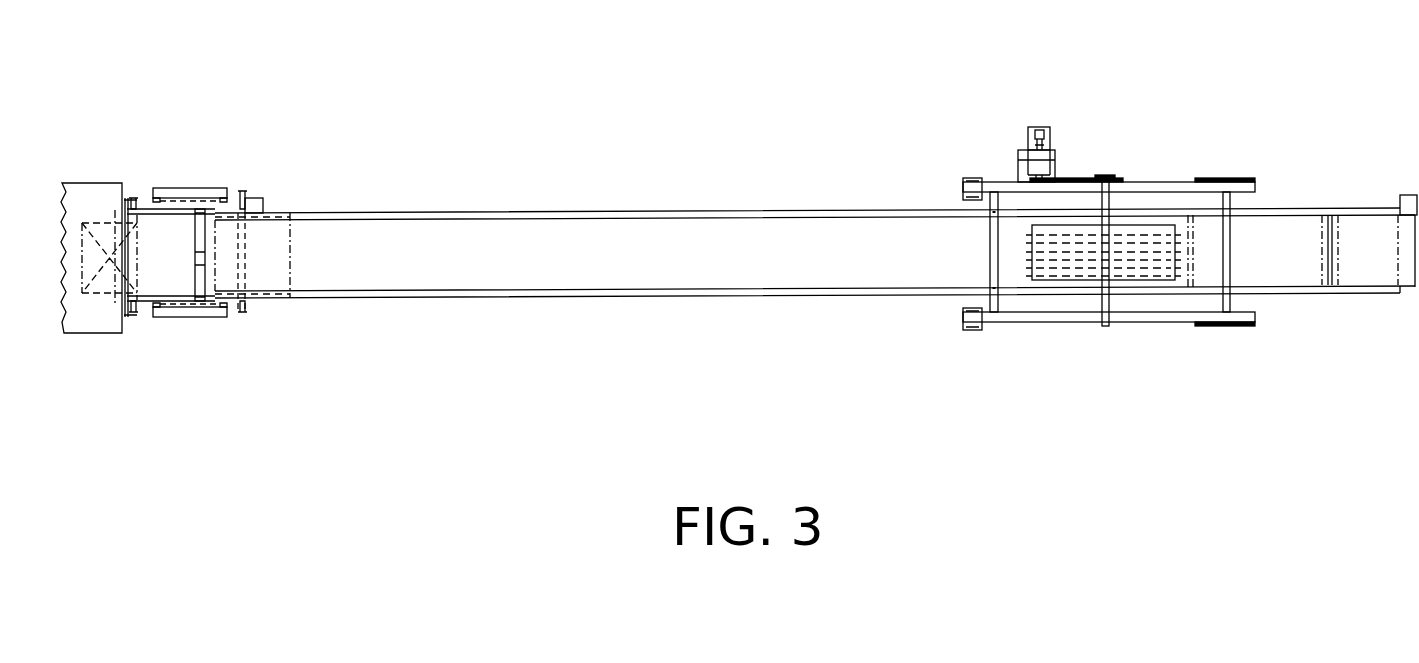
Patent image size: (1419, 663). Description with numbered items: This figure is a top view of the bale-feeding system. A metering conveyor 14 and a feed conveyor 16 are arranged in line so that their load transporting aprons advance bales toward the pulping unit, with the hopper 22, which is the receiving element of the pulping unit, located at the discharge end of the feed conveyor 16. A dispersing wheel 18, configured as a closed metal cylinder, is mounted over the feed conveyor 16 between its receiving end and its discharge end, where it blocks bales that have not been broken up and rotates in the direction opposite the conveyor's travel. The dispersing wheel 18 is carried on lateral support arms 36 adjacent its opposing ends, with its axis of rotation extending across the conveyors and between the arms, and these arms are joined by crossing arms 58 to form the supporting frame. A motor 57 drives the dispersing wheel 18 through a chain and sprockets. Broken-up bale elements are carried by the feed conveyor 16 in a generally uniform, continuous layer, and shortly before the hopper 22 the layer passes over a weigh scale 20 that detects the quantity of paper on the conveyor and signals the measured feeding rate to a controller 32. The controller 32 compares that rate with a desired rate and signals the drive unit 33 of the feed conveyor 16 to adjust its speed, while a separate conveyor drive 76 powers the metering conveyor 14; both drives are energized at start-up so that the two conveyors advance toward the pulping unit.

The metering conveyor 14 is at (1375, 260).
The feed conveyor 16 is at (742, 265).
The dispersing wheel 18 is at (1032, 273).
The weigh scale 20 is at (197, 280).
The hopper 22 is at (92, 182).
The controller 32 is at (188, 187).
The drive unit 33 is at (250, 198).
The lateral support arms 36 is at (1050, 324).
The motor 57 is at (1037, 127).
The crossing arms 58 is at (987, 255).
The conveyor drive 76 is at (1407, 193).